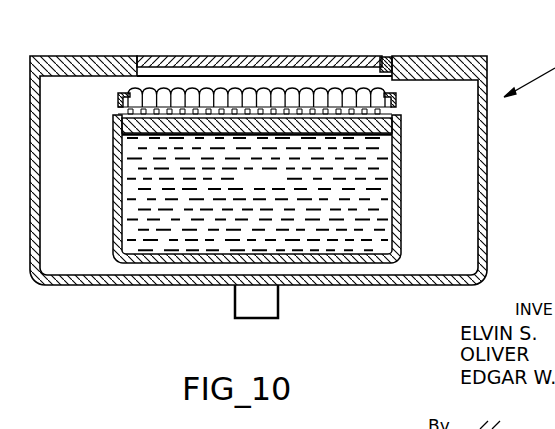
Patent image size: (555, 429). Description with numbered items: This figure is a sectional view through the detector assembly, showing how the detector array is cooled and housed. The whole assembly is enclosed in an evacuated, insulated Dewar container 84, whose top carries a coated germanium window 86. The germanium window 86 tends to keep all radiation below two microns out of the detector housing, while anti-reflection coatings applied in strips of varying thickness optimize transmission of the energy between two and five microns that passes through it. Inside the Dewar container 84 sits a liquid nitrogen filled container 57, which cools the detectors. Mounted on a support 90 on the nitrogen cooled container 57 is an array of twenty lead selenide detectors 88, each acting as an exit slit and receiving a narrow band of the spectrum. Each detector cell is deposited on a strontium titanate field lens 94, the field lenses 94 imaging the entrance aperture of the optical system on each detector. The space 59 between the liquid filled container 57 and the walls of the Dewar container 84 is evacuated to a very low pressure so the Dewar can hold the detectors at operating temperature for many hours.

The liquid nitrogen filled container 57 is at (257, 194).
The space 59 is at (421, 207).
The Dewar container 84 is at (487, 190).
The coated germanium window 86 is at (287, 58).
The lead selenide detectors 88 is at (123, 117).
The support 90 is at (378, 129).
The strontium titanate field lenses 94 is at (163, 88).